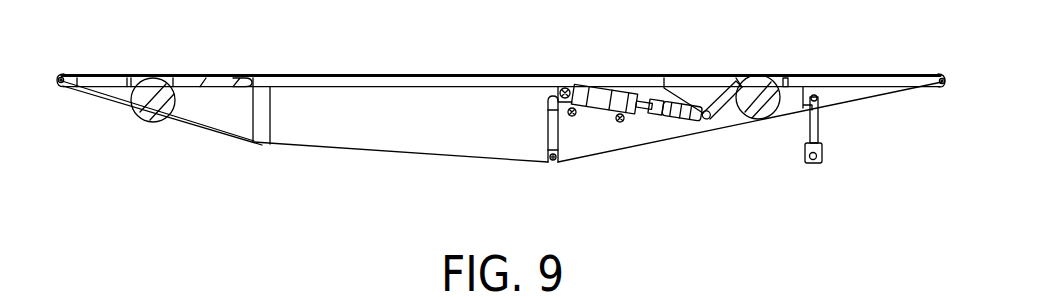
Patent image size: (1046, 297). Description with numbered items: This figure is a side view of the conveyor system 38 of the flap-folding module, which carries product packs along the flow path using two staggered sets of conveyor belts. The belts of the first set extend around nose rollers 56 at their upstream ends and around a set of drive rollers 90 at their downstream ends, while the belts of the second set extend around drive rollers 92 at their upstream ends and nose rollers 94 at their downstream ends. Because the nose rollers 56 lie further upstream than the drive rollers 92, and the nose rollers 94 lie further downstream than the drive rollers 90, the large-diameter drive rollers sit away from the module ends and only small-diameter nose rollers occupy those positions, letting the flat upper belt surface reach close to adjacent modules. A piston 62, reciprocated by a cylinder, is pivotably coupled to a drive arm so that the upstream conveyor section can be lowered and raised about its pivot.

The conveyor system 38 is at (690, 184).
The nose roller 56 is at (943, 85).
The piston 62 is at (601, 98).
The drive roller 90 is at (148, 93).
The drive roller 92 is at (763, 94).
The nose roller 94 is at (62, 84).